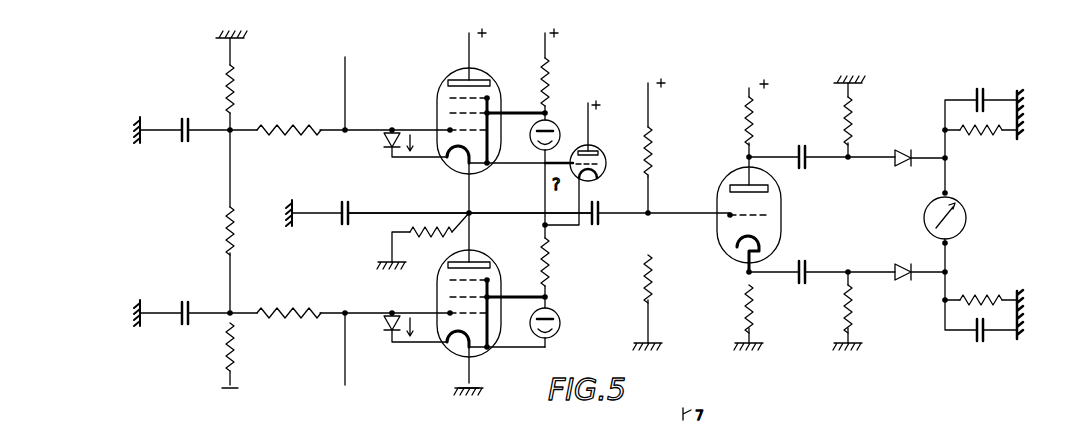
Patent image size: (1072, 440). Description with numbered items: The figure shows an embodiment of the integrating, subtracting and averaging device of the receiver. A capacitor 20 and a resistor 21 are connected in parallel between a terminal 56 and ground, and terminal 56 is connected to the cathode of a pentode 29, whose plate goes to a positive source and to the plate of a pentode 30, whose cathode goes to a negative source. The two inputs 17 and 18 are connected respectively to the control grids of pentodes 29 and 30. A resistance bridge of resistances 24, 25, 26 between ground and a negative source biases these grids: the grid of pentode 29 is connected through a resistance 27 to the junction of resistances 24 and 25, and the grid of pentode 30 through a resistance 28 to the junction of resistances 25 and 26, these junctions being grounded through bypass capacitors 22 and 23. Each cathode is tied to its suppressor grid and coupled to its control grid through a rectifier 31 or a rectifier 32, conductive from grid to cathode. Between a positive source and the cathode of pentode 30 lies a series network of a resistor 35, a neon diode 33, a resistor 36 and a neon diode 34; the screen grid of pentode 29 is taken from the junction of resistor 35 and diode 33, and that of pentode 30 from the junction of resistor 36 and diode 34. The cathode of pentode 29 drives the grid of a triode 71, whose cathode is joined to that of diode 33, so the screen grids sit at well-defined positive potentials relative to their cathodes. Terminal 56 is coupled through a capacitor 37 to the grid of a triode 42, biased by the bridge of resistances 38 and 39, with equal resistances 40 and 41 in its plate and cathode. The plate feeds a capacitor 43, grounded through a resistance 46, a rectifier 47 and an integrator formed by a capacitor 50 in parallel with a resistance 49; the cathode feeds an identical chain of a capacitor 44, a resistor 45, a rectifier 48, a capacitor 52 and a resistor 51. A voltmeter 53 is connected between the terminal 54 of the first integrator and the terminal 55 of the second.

The input 17 is at (346, 70).
The input 18 is at (346, 364).
The capacitor 20 is at (342, 205).
The resistor 21 is at (423, 241).
The bypass capacitor 22 is at (185, 118).
The bypass capacitor 23 is at (185, 305).
The resistance 24 is at (228, 86).
The resistance 25 is at (228, 226).
The resistance 26 is at (238, 348).
The resistance 27 is at (285, 126).
The resistance 28 is at (290, 310).
The pentode 29 is at (449, 73).
The pentode 30 is at (485, 259).
The rectifier 31 is at (385, 145).
The rectifier 32 is at (387, 338).
The neon diode 33 is at (552, 126).
The neon diode 34 is at (552, 305).
The resistor 35 is at (552, 78).
The resistor 36 is at (552, 260).
The capacitor 37 is at (601, 222).
The resistance 38 is at (654, 158).
The resistance 39 is at (654, 280).
The resistance 40 is at (754, 131).
The resistance 41 is at (755, 318).
The triode 42 is at (783, 215).
The capacitor 43 is at (808, 168).
The capacitor 44 is at (808, 262).
The resistor 45 is at (856, 315).
The resistance 46 is at (856, 119).
The rectifier 47 is at (903, 168).
The rectifier 48 is at (900, 266).
The resistance 49 is at (985, 135).
The capacitor 50 is at (976, 96).
The resistor 51 is at (985, 298).
The capacitor 52 is at (995, 338).
The voltmeter 53 is at (968, 215).
The terminal 54 is at (950, 160).
The terminal 55 is at (950, 271).
The terminal 56 is at (474, 210).
The triode 71 is at (606, 168).